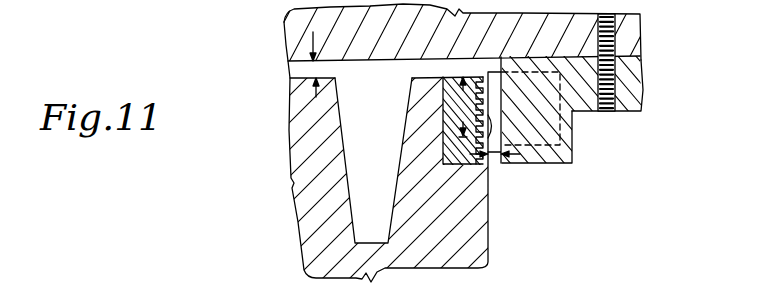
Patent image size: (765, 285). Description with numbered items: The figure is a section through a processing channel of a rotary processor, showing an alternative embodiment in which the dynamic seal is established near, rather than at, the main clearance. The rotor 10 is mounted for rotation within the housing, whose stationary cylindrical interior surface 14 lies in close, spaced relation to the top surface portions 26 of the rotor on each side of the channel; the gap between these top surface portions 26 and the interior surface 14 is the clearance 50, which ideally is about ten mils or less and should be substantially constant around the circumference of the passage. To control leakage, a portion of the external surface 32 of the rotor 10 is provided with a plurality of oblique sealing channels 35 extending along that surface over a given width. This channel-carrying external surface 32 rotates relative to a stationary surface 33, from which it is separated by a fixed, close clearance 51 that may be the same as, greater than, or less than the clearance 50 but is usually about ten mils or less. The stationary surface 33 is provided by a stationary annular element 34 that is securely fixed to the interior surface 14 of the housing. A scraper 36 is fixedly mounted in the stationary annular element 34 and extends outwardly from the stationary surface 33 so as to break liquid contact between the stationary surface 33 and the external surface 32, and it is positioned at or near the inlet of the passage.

The rotor 10 is at (290, 136).
The cylindrical interior surface 14 is at (348, 52).
The top surface portions 26 is at (424, 73).
The external surface 32 is at (500, 57).
The stationary surface 33 is at (502, 108).
The stationary annular element 34 is at (573, 148).
The sealing channels 35 is at (466, 163).
The scraper 36 is at (547, 55).
The clearance 50 is at (291, 69).
The clearance 51 is at (493, 158).